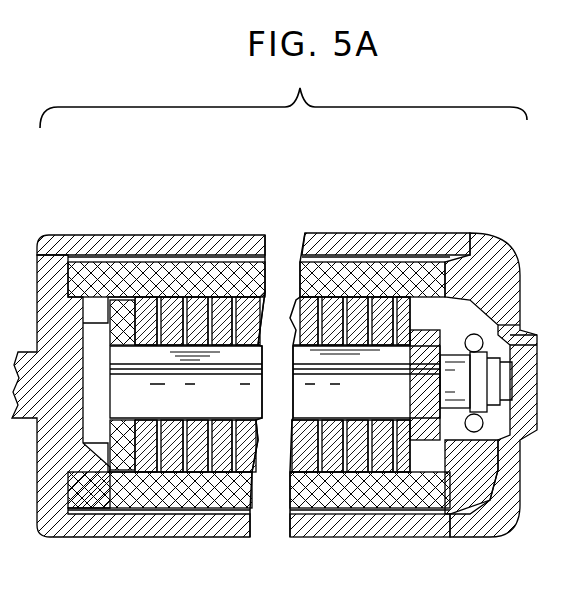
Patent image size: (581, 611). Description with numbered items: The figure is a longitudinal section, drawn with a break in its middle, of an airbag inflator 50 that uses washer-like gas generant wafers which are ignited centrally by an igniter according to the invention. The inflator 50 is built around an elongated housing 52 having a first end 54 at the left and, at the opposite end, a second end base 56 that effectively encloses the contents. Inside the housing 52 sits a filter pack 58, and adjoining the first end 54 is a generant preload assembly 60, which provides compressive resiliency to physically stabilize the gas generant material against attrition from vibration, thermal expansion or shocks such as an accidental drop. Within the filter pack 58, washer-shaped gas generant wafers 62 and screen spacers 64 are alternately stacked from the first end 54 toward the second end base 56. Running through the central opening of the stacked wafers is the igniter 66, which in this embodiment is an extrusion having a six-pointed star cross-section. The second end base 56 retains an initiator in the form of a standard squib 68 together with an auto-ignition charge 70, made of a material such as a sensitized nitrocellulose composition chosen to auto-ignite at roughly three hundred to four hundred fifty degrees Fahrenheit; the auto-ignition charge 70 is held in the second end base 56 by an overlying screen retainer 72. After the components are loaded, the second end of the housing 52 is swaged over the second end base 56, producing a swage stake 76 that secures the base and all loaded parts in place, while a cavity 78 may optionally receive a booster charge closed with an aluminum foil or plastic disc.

The inflator 50 is at (218, 232).
The elongated housing 52 is at (398, 247).
The first end 54 is at (50, 245).
The second end base 56 is at (478, 300).
The filter pack 58 is at (175, 268).
The generant preload assembly 60 is at (120, 300).
The gas generant wafers 62 is at (318, 300).
The screen spacers 64 is at (343, 300).
The igniter 66 is at (230, 396).
The squib 68 is at (405, 388).
The auto-ignition charge 70 is at (500, 455).
The screen retainer 72 is at (430, 428).
The swage stake 76 is at (505, 532).
The cavity 78 is at (520, 290).